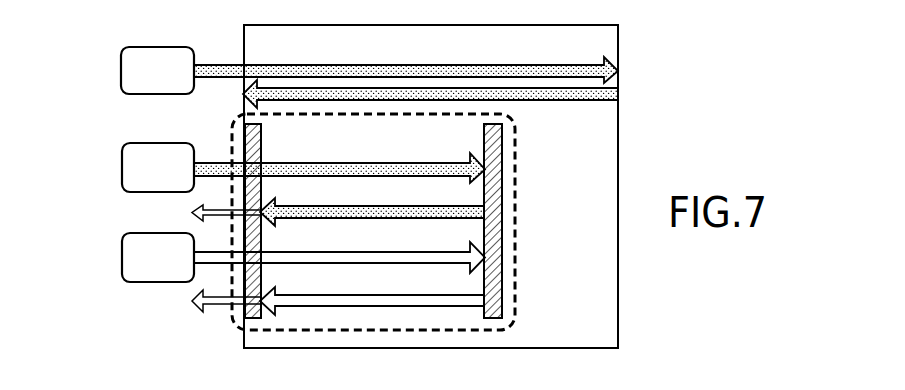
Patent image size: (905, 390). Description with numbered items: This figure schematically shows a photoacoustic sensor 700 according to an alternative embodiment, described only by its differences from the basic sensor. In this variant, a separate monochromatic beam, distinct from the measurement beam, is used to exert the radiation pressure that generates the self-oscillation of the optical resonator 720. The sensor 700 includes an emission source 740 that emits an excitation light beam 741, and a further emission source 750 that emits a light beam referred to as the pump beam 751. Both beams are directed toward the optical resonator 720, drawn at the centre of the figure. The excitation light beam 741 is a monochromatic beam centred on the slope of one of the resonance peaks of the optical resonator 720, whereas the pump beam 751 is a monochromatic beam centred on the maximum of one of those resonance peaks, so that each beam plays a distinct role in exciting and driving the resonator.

The photoacoustic sensor 700 is at (667, 30).
The optical resonator 720 is at (230, 319).
The emission source 740 is at (128, 168).
The excitation light beam 741 is at (213, 163).
The emission source 750 is at (128, 255).
The pump beam 751 is at (203, 258).